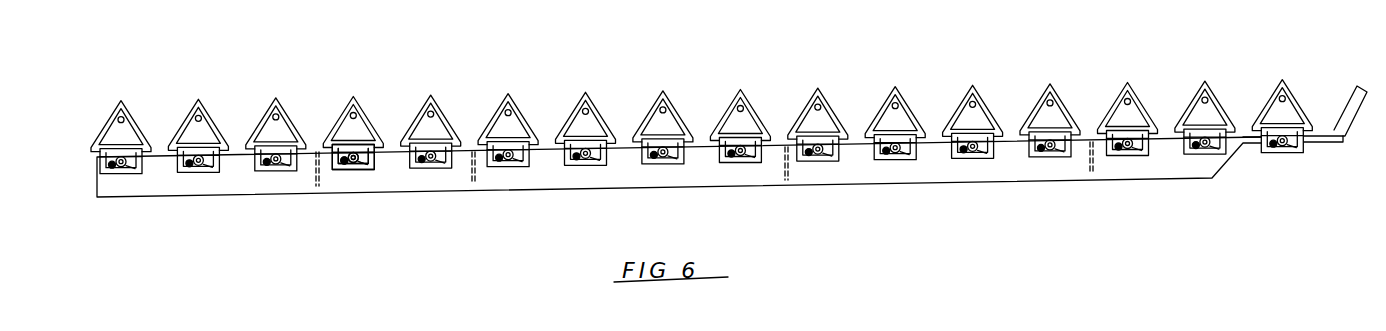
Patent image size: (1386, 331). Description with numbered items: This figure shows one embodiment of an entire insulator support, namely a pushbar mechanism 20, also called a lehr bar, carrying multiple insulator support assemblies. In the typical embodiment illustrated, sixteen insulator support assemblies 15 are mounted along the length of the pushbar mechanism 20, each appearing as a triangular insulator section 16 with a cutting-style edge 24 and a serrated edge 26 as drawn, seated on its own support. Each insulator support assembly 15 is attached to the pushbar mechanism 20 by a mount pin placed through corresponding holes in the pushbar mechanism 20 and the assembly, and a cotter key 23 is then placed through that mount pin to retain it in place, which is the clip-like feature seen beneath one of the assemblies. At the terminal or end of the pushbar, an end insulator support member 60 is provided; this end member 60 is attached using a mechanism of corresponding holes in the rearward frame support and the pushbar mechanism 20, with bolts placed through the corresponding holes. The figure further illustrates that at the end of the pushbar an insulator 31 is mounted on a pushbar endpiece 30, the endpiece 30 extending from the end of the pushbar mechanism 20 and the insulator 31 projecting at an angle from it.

The insulator support assembly 15 is at (500, 74).
The knife section 16 is at (822, 100).
The pushbar mechanism 20 is at (391, 183).
The cotter key 23 is at (341, 173).
The knife cutting edge 24 is at (594, 107).
The serrated edge 26 is at (731, 104).
The pushbar endpiece 30 is at (1352, 130).
The insulator 31 is at (1353, 98).
The end insulator support member 60 is at (1271, 112).